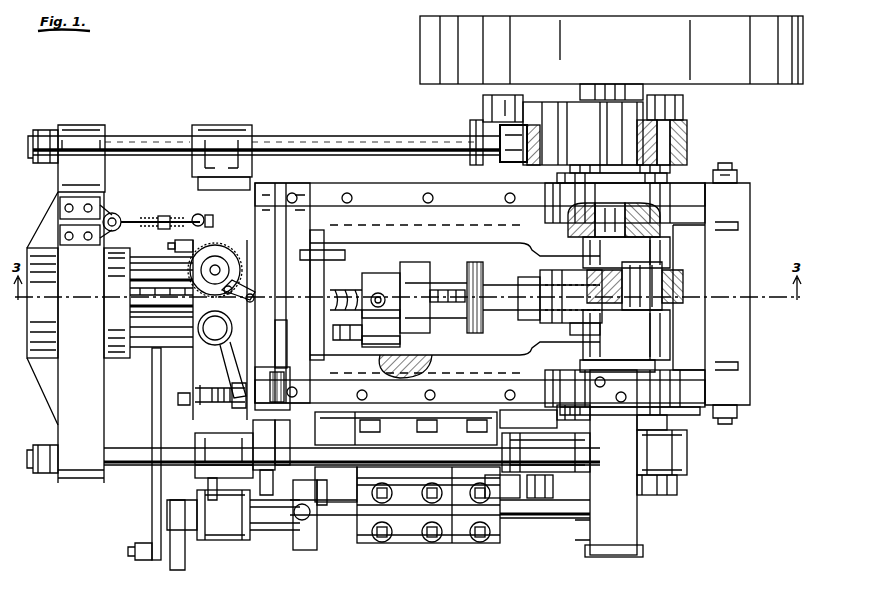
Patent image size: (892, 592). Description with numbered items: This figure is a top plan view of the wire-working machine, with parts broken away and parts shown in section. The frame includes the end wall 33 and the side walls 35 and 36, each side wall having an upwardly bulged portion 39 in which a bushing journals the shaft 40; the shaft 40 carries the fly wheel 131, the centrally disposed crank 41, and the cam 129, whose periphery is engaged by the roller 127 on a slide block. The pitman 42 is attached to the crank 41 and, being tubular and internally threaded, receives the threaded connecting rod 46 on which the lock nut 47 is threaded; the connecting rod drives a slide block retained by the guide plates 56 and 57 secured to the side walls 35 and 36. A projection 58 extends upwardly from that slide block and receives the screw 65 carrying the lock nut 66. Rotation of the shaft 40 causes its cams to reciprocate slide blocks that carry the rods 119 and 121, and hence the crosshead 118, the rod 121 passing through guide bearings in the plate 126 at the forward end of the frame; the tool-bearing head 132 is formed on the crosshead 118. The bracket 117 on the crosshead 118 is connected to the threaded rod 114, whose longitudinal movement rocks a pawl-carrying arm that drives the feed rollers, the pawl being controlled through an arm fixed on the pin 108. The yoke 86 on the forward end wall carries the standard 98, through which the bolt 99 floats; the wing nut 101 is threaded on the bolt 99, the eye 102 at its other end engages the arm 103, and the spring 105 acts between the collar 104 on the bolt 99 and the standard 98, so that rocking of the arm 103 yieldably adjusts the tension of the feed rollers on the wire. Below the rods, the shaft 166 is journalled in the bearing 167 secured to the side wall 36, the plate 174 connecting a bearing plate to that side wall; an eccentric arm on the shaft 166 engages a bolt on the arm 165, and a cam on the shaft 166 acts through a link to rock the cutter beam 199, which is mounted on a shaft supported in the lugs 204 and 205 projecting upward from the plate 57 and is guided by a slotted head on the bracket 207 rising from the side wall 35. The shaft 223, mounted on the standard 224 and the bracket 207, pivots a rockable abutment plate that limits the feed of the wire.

The fly wheel 131 is at (440, 32).
The shaft 40 is at (608, 115).
The rod 121 is at (306, 150).
The plate 126 is at (222, 160).
The bracket 117 is at (112, 210).
The threaded rod 114 is at (158, 215).
The bracket 207 is at (290, 190).
The standard 224 is at (398, 200).
The guide plate 56 is at (470, 177).
The guide plate 57 is at (492, 392).
The lug 204 is at (330, 380).
The shaft 223 is at (328, 243).
The projection 58 is at (418, 330).
The lock nut 66 is at (442, 290).
The screw 65 is at (458, 278).
The threaded connecting rod 46 is at (500, 293).
The lock nut 47 is at (528, 285).
The pitman 42 is at (570, 320).
The upwardly bulged portion 39 is at (555, 200).
The crank 41 is at (672, 265).
The end rail or end wall 33 is at (745, 335).
The side rail or side wall 35 is at (702, 190).
The side rail or side wall 36 is at (708, 414).
The crosshead 118 is at (70, 410).
The tool-bearing head 132 is at (118, 325).
The yoke 86 is at (200, 360).
The arm 103 is at (240, 362).
The bolt 99 is at (185, 402).
The wing nut 101 is at (165, 410).
The standard or bracket 98 is at (200, 410).
The collar 104 is at (226, 460).
The eye 102 is at (270, 457).
The spring 105 is at (210, 480).
The lug 205 is at (270, 420).
The cutter beam 199 is at (305, 474).
The rod 119 is at (405, 455).
The bearing 167 is at (452, 540).
The rod or shaft 166 is at (515, 525).
The cam 129 is at (548, 522).
The arm 165 is at (155, 510).
The plate 174 is at (640, 528).
The roller 127 is at (672, 486).
The pin 108 is at (264, 585).